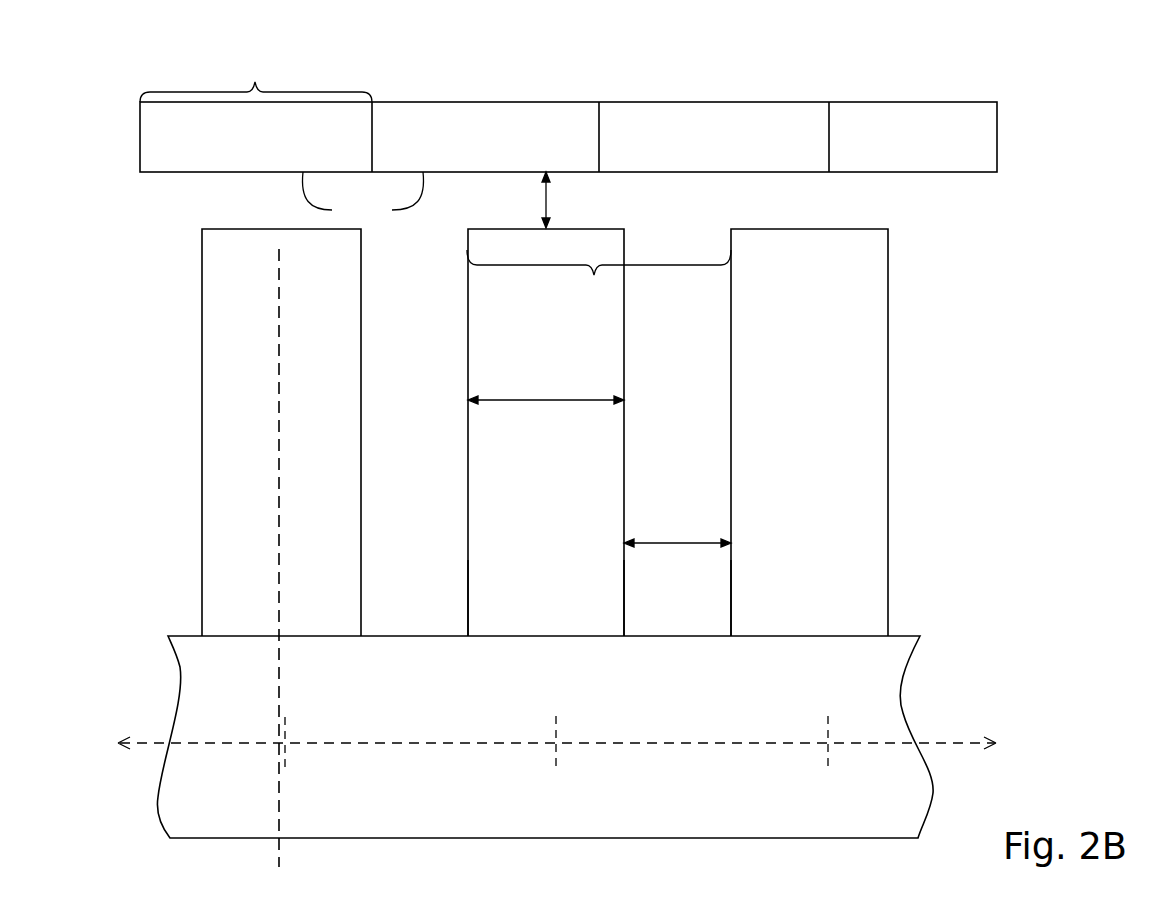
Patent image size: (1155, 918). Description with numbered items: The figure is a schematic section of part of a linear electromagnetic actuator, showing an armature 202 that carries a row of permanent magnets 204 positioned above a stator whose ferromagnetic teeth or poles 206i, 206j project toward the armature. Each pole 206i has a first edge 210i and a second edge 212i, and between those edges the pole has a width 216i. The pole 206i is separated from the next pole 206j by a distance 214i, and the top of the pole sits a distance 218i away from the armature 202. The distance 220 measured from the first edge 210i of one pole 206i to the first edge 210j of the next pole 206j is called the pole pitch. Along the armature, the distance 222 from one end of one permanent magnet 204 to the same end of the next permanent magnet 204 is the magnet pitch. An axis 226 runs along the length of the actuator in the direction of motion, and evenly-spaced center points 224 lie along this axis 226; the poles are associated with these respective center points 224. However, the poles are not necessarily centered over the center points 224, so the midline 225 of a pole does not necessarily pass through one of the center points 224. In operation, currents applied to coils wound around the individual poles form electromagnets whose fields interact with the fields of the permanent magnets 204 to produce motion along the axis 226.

The armature 202 is at (432, 88).
The permanent magnets 204 is at (362, 197).
The pole 206i is at (556, 483).
The next pole 206j is at (820, 493).
The first edge 210i is at (468, 574).
The first edge 210j is at (731, 570).
The second edge 212i is at (624, 568).
The distance 214i is at (673, 540).
The width 216i is at (545, 396).
The distance 218i is at (563, 198).
The distance 220 is at (599, 281).
The distance 222 is at (256, 60).
The center points 224 is at (856, 769).
The midline 225 is at (280, 470).
The axis 226 is at (963, 740).